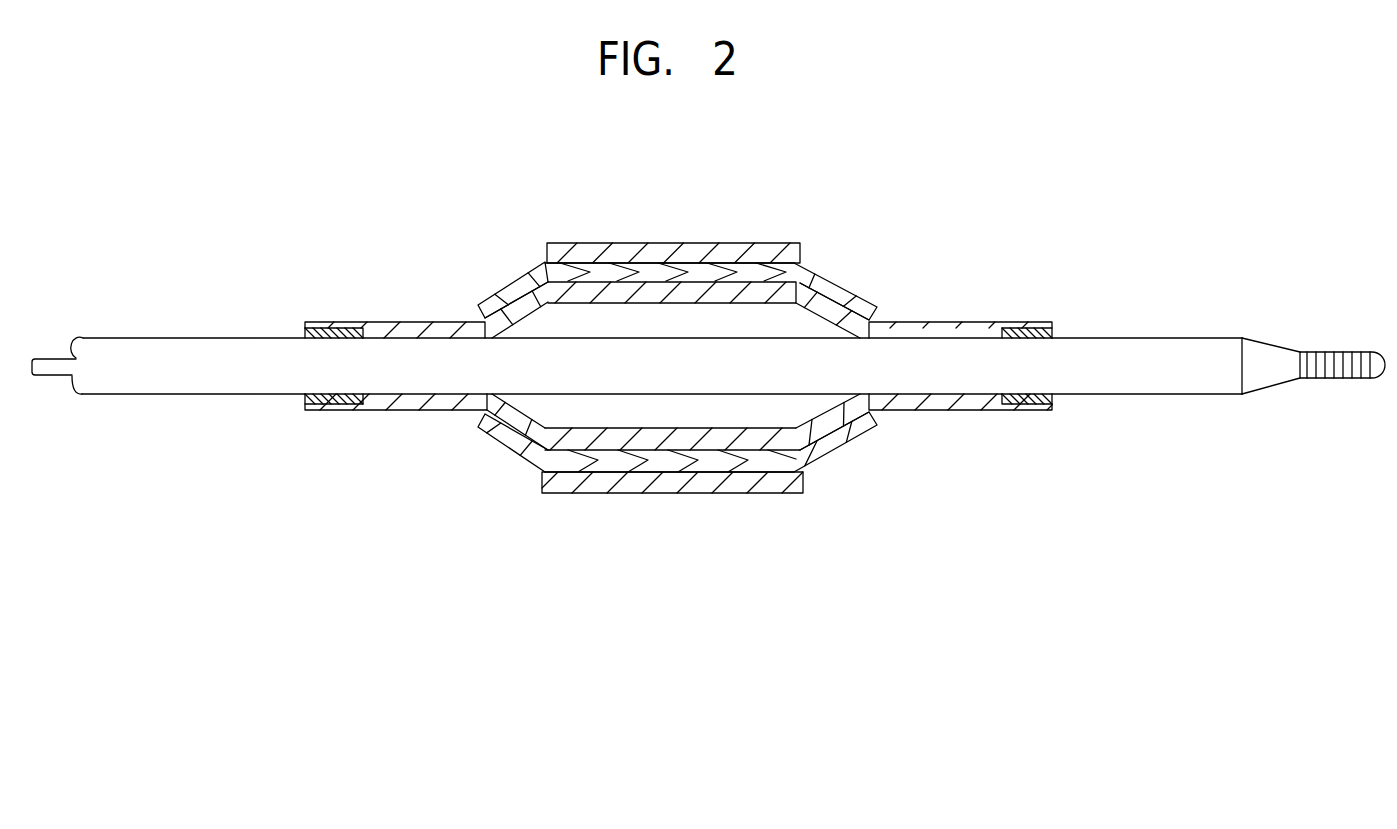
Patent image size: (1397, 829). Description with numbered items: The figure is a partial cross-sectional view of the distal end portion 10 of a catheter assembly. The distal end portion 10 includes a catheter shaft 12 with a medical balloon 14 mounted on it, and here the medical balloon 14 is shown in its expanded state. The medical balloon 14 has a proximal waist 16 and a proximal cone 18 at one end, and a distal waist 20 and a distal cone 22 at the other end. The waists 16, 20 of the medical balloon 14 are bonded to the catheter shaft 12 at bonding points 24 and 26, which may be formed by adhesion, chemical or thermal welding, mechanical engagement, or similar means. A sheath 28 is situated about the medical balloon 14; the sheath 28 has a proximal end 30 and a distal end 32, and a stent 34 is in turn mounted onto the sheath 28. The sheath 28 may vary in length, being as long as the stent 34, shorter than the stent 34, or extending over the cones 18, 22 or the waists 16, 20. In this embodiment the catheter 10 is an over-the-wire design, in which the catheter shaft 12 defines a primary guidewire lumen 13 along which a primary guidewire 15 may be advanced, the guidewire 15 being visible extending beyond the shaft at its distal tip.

The distal end portion of catheter assembly 10 is at (478, 278).
The catheter shaft 12 is at (320, 365).
The primary guidewire lumen 13 is at (70, 333).
The medical balloon 14 is at (728, 287).
The primary guidewire 15 is at (1343, 352).
The proximal waist 16 is at (415, 320).
The proximal cone 18 is at (530, 290).
The distal waist 20 is at (980, 400).
The distal cone 22 is at (843, 310).
The bonding point 24 is at (322, 405).
The bonding point 26 is at (1006, 330).
The sheath 28 is at (812, 274).
The proximal end of sheath 30 is at (485, 432).
The distal end of sheath 32 is at (870, 424).
The stent 34 is at (678, 243).